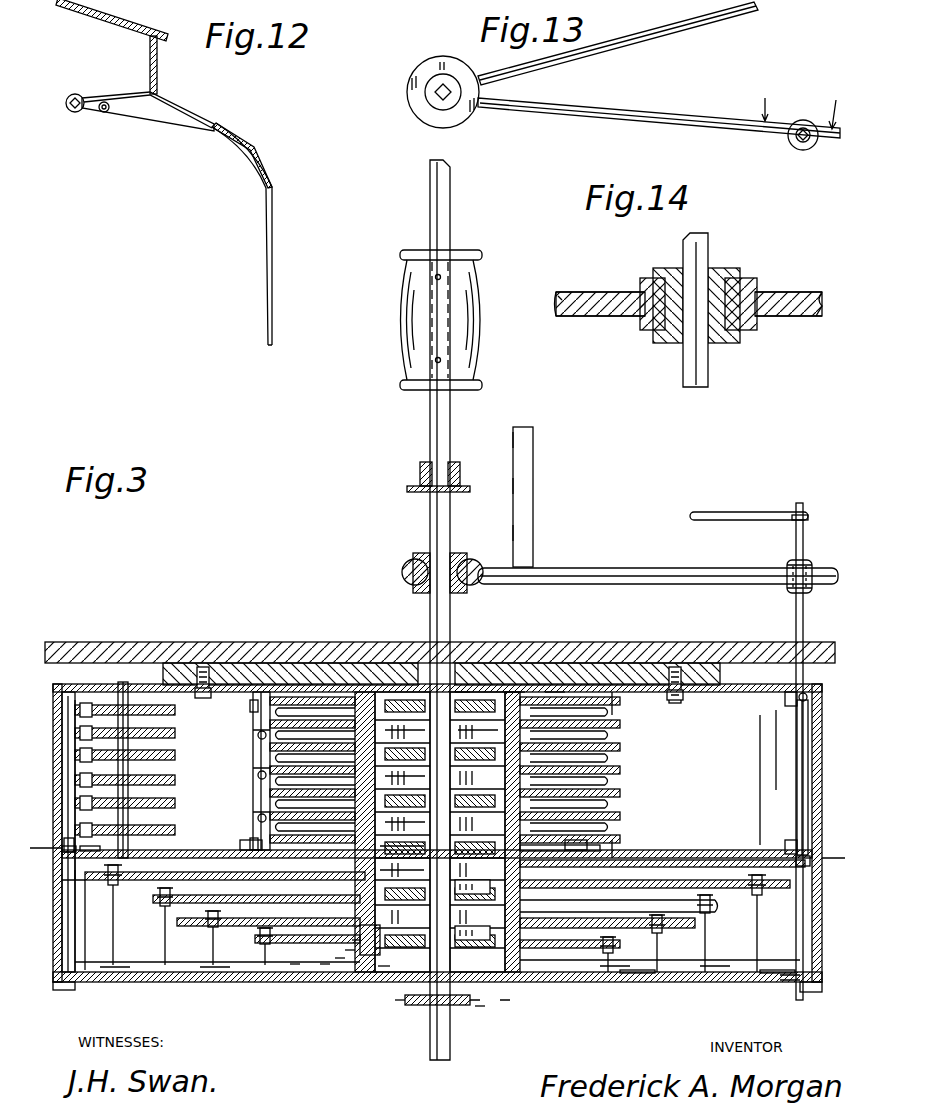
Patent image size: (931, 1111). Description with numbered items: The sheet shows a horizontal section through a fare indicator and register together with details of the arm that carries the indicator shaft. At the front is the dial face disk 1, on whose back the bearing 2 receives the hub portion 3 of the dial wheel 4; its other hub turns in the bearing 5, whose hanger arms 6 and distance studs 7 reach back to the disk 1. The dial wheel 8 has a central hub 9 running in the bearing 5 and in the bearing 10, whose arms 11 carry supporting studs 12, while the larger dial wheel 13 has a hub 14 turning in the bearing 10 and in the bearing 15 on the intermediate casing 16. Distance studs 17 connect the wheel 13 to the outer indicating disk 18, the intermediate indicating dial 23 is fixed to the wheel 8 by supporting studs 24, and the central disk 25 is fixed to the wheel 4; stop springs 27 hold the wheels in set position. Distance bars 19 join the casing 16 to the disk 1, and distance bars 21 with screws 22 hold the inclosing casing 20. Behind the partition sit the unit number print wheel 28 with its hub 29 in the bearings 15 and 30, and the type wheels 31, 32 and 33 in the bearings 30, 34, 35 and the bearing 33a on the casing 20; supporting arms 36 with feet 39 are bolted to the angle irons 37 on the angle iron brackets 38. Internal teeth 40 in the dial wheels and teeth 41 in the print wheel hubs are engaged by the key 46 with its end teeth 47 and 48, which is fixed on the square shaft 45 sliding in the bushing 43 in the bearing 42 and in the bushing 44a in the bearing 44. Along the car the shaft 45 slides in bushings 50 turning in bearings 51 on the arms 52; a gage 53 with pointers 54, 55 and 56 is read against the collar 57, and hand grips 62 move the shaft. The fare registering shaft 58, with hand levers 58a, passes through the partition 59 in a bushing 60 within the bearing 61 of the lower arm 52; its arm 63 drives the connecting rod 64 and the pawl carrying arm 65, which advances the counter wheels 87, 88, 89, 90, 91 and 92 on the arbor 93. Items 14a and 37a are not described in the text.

In FIG. 3, the disk 1 is at (290, 968).
In FIG. 3, the bearing 2 is at (472, 1002).
In FIG. 3, the hub portion 3 is at (478, 1008).
In FIG. 3, the dial wheel 4 is at (437, 842).
In FIG. 3, the bearing 5 is at (540, 975).
In FIG. 3, the hanger arms 6 is at (600, 975).
In FIG. 3, the distance studs 7 is at (620, 975).
In FIG. 3, the dial wheel 8 is at (650, 975).
In FIG. 3, the central hub 9 is at (345, 950).
In FIG. 3, the bearing 10 is at (335, 956).
In FIG. 3, the arms 11 is at (680, 975).
In FIG. 3, the supporting studs 12 is at (710, 975).
In FIG. 3, the dial wheel 13 is at (745, 975).
In FIG. 3, the hub 14 is at (385, 968).
In FIG. 3, the casing corner pin 14a is at (822, 725).
In FIG. 3, the bearing 15 is at (320, 962).
In FIG. 3, the intermediate casing 16 is at (215, 859).
In FIG. 3, the distance studs 17 is at (762, 975).
In FIG. 3, the outer indicating disk 18 is at (70, 878).
In FIG. 3, the distance bars 19 is at (60, 984).
In FIG. 3, the inclosing casing 20 is at (785, 707).
In FIG. 3, the distance bars 21 is at (776, 762).
In FIG. 3, the screws 22 is at (797, 722).
In FIG. 3, the intermediate indicating dial 23 is at (700, 1000).
In FIG. 3, the supporting studs 24 is at (725, 1000).
In FIG. 3, the central disk 25 is at (352, 942).
In FIG. 3, the stop springs 27 is at (175, 908).
In FIG. 3, the unit number print wheel 28 is at (602, 848).
In FIG. 3, the hub 29 is at (530, 866).
In FIG. 3, the bearing 30 is at (622, 796).
In FIG. 3, the type wheel 31 is at (622, 774).
In FIG. 3, the type wheel 32 is at (622, 752).
In FIG. 3, the type wheel 33 is at (622, 717).
In FIG. 3, the bearing 33a is at (555, 690).
In FIG. 3, the bearing 34 is at (607, 758).
In FIG. 3, the bearing 35 is at (607, 735).
In FIG. 3, the supporting arms 36 is at (270, 762).
In FIG. 3, the angle irons 37 is at (253, 783).
In FIG. 3, the hub finger 37a is at (405, 828).
In FIG. 3, the angle iron brackets 38 is at (622, 701).
In FIG. 3, the feet 39 is at (258, 733).
In FIG. 3, the internal teeth 40 is at (470, 892).
In FIG. 3, the teeth 41 is at (405, 759).
In FIG. 3, the bearing 42 is at (396, 1002).
In FIG. 3, the bushing 43 is at (420, 1006).
In FIG. 3, the bearing 44 is at (515, 690).
In FIG. 3, the bushing 44a is at (463, 690).
In FIG. 3, the square shaft 45 is at (432, 193).
In FIG. 3, the key 46 is at (402, 858).
In FIG. 3, the end teeth 47 is at (478, 737).
In FIG. 3, the end teeth 48 is at (382, 930).
In FIG. 12, the bushings 50 is at (72, 110).
In FIG. 13, the bushings 50 is at (435, 100).
In FIG. 3, the bushings 50 is at (413, 556).
In FIG. 12, the bearings 51 is at (72, 95).
In FIG. 13, the bearings 51 is at (408, 90).
In FIG. 3, the bearings 51 is at (405, 580).
In FIG. 12, the arms 52 is at (125, 100).
In FIG. 13, the arms 52 is at (643, 113).
In FIG. 3, the arms 52 is at (650, 584).
In FIG. 3, the gage 53 is at (533, 516).
In FIG. 3, the pointer 54 is at (513, 441).
In FIG. 3, the pointer 55 is at (513, 487).
In FIG. 3, the pointer 56 is at (513, 533).
In FIG. 3, the collar 57 is at (407, 488).
In FIG. 14, the fare registering shaft 58 is at (700, 386).
In FIG. 3, the fare registering shaft 58 is at (800, 503).
In FIG. 3, the hand levers 58a is at (700, 512).
In FIG. 3, the partition 59 is at (715, 655).
In FIG. 13, the bushing 60 is at (793, 146).
In FIG. 14, the bushing 60 is at (722, 335).
In FIG. 3, the bushing 60 is at (812, 568).
In FIG. 12, the bearing 61 is at (104, 113).
In FIG. 13, the bearing 61 is at (806, 150).
In FIG. 14, the bearing 61 is at (650, 330).
In FIG. 3, the bearing 61 is at (812, 590).
In FIG. 3, the hand grips 62 is at (422, 338).
In FIG. 3, the arm 63 is at (812, 868).
In FIG. 3, the connecting rod 64 is at (260, 848).
In FIG. 3, the pawl carrying arm 65 is at (180, 840).
In FIG. 3, the counter wheel 87 is at (170, 831).
In FIG. 3, the counter wheel 88 is at (170, 803).
In FIG. 3, the counter wheel 89 is at (170, 780).
In FIG. 3, the counter wheel 90 is at (170, 755).
In FIG. 3, the counter wheel 91 is at (170, 734).
In FIG. 3, the counter wheel 92 is at (170, 712).
In FIG. 3, the arbor 93 is at (123, 688).